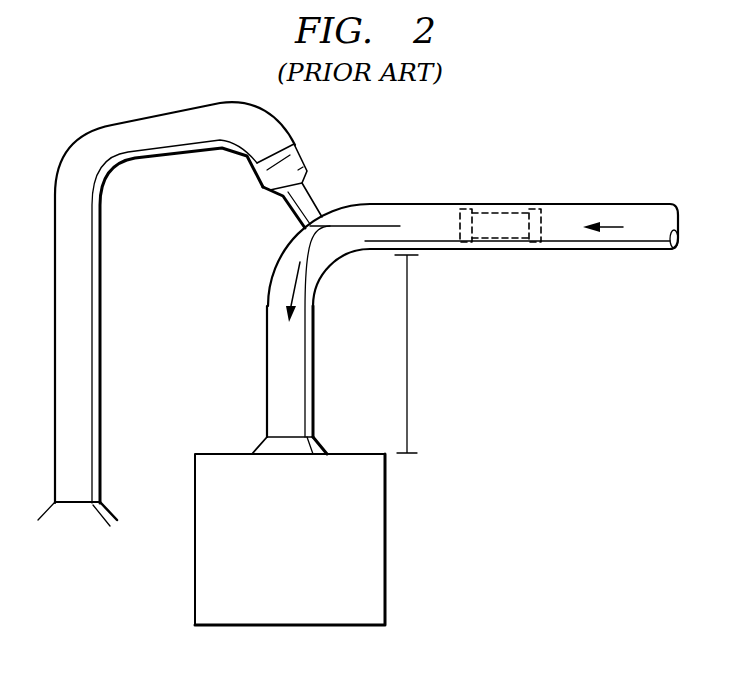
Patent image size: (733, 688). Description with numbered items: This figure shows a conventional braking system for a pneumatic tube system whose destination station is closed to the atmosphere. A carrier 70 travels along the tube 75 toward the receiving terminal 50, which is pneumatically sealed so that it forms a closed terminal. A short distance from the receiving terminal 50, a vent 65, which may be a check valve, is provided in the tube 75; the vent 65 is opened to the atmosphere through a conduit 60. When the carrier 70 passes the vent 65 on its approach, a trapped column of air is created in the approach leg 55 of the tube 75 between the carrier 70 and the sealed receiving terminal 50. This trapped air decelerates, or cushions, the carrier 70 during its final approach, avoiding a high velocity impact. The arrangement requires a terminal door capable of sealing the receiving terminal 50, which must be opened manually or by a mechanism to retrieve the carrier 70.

The receiving terminal 50 is at (385, 550).
The approach leg 55 is at (303, 394).
The conduit 60 is at (108, 126).
The vent 65 is at (298, 150).
The carrier 70 is at (502, 212).
The tube 75 is at (630, 204).